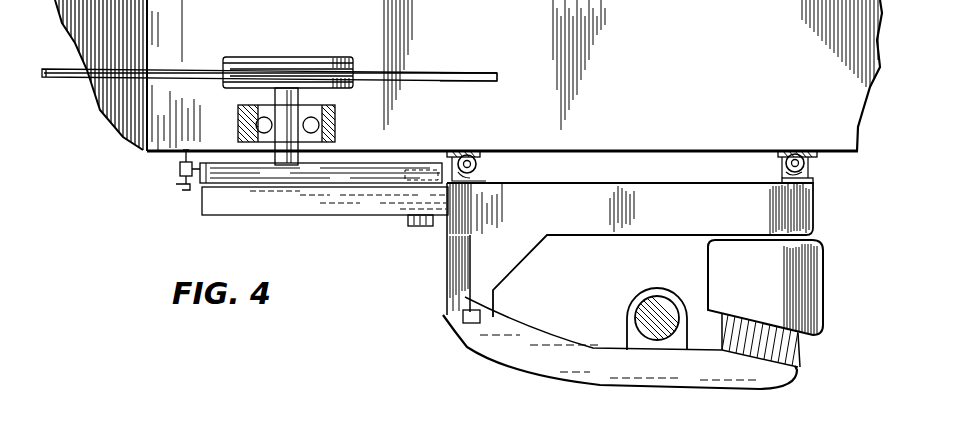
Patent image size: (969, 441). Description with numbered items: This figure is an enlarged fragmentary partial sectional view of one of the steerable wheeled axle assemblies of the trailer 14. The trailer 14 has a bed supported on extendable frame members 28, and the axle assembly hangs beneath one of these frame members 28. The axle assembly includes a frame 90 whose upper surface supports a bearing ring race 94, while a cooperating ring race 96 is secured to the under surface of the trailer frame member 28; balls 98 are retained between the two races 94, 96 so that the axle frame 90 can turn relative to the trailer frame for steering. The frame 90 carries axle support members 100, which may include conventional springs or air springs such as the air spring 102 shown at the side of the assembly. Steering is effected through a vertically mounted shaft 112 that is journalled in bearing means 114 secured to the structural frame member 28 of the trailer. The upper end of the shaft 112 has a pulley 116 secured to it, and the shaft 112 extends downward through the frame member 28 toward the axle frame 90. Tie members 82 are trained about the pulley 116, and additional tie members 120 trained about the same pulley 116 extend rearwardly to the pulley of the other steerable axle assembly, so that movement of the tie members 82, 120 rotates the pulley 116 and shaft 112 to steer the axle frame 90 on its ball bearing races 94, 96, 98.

The trailer 14 is at (884, 64).
The extendable frame members 28 is at (692, 74).
The tie members 82 is at (196, 68).
The frame 90 is at (586, 225).
The bearing ring race 94 is at (813, 182).
The cooperating ring race 96 is at (778, 157).
The balls 98 is at (483, 164).
The axle support members 100 is at (697, 376).
The air springs 102 is at (840, 303).
The shaft 112 is at (282, 97).
The bearing means 114 is at (240, 118).
The pulley 116 is at (315, 57).
The tie members 120 is at (448, 83).